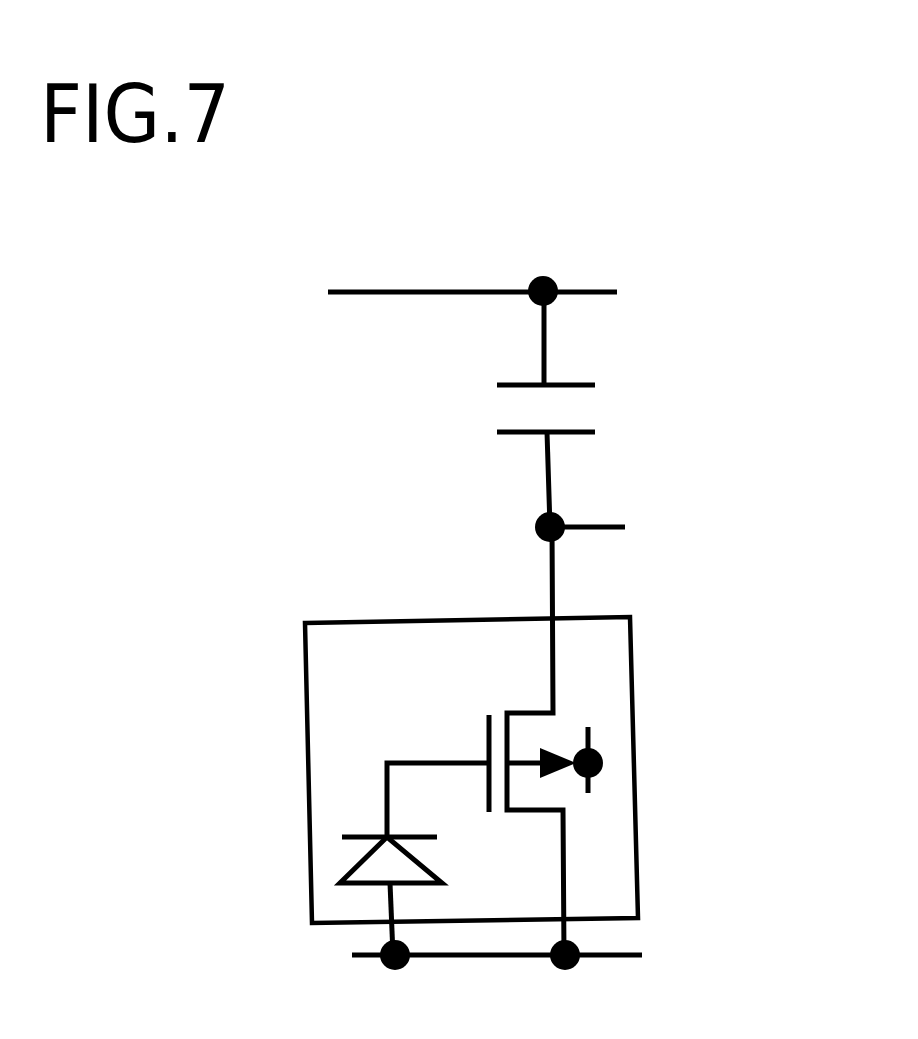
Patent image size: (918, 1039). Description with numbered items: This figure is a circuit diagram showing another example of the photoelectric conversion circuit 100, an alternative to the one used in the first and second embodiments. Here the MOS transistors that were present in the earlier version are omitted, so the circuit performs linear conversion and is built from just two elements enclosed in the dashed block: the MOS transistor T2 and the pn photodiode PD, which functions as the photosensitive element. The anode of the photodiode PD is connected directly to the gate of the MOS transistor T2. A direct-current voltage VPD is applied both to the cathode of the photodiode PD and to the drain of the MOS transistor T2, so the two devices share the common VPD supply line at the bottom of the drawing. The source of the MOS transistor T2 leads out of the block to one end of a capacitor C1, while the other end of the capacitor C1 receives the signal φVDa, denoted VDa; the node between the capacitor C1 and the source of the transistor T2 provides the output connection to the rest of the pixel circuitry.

The photoelectric conversion circuit 100 is at (635, 767).
The MOS transistor T2 is at (495, 741).
The photodiode PD is at (428, 896).
The capacitor C1 is at (525, 416).
The signal φ VDa is at (402, 295).
The direct-current voltage VPD is at (427, 960).